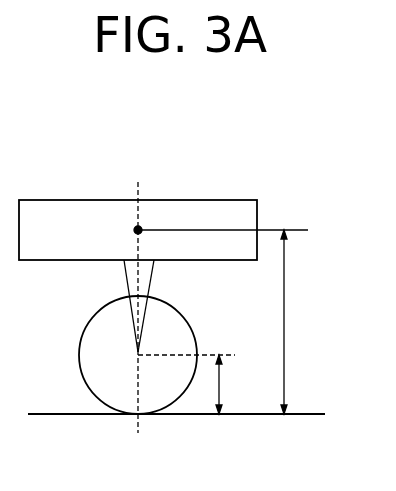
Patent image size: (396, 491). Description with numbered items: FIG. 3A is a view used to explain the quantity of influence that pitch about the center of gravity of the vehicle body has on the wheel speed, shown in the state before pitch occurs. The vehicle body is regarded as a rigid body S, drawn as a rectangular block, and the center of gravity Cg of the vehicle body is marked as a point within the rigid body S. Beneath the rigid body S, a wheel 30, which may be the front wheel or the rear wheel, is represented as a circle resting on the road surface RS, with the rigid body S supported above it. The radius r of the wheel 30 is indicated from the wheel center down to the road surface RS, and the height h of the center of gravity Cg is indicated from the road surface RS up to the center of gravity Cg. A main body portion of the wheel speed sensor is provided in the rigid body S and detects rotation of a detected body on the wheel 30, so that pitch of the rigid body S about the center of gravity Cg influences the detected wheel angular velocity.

The wheel 30 is at (79, 346).
The rigid body S is at (210, 200).
The center of gravity Cg is at (133, 230).
The road surface RS is at (307, 414).
The height of the center of gravity h is at (294, 322).
The radius of the wheel r is at (225, 384).